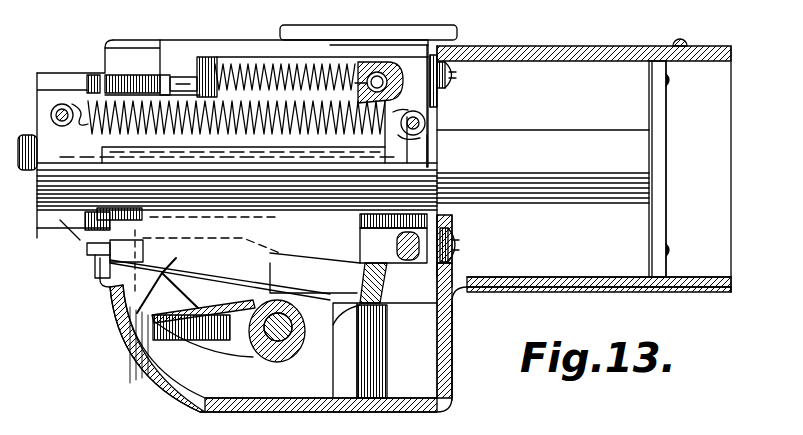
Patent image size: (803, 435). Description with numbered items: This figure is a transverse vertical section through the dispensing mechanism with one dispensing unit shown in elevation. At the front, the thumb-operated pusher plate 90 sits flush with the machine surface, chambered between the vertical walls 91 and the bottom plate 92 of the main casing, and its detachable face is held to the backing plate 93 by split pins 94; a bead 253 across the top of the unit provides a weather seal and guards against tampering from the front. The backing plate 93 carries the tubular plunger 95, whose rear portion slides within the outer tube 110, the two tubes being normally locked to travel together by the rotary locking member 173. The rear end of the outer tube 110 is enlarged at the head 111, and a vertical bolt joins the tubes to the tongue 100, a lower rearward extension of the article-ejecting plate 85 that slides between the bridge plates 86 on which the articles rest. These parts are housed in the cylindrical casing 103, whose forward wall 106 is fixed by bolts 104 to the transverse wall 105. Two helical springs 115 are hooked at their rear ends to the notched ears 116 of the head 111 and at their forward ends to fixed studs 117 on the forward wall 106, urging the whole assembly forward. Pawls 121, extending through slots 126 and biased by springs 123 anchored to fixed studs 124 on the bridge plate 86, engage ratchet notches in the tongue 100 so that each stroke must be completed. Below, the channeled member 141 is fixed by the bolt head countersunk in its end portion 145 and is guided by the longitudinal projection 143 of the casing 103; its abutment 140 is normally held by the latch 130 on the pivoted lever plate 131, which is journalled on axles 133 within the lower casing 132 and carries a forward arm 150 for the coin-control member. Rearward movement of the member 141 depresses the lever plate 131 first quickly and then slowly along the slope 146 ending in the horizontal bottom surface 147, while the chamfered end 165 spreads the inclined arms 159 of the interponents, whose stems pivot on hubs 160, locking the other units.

The article-ejecting plate 85 is at (427, 33).
The bridge plate 86 is at (277, 50).
The pusher plate 90 is at (668, 138).
The vertical wall 91 is at (712, 227).
The bottom plate 92 is at (705, 282).
The backing plate 93 is at (648, 97).
The split pin 94 is at (672, 80).
The tubular plunger 95 is at (574, 138).
The tongue 100 is at (78, 75).
The cylindrical casing 103 is at (450, 200).
The bolt 104 is at (462, 248).
The transverse wall 105 is at (445, 352).
The forward wall 106 is at (420, 145).
The outer tube 110 is at (90, 148).
The enlarged head 111 is at (70, 235).
The helical spring 115 is at (270, 150).
The notched ear 116 is at (60, 103).
The fixed stud 117 is at (425, 123).
The pawl 121 is at (185, 80).
The spring 123 is at (295, 80).
The fixed stud 124 is at (380, 75).
The slot 126 is at (165, 78).
The latch 130 is at (130, 350).
The lever plate 131 is at (157, 370).
The casing 132 is at (185, 400).
The axle 133 is at (278, 345).
The abutment 140 is at (112, 316).
The channeled member 141 is at (160, 320).
The longitudinal projection 143 is at (440, 275).
The end portion 145 is at (88, 255).
The slope 146 is at (240, 290).
The horizontal bottom surface 147 is at (310, 312).
The arm 150 is at (318, 355).
The inclined arm 159 is at (98, 268).
The hub 160 is at (332, 307).
The chamfered end 165 is at (100, 287).
The rotary locking member 173 is at (28, 172).
The bead 253 is at (688, 42).